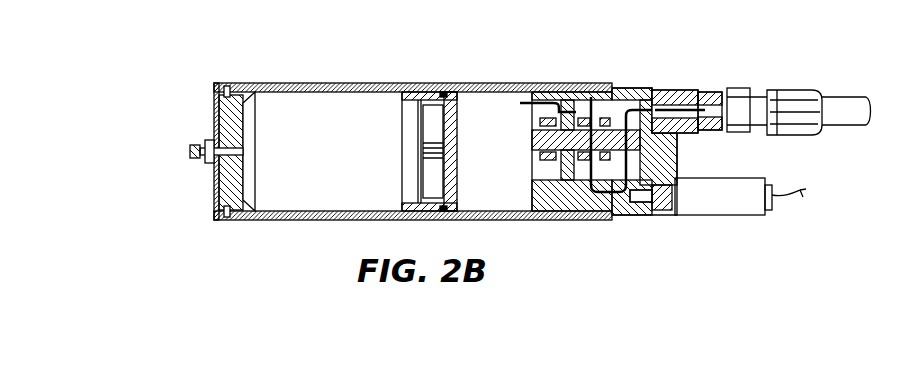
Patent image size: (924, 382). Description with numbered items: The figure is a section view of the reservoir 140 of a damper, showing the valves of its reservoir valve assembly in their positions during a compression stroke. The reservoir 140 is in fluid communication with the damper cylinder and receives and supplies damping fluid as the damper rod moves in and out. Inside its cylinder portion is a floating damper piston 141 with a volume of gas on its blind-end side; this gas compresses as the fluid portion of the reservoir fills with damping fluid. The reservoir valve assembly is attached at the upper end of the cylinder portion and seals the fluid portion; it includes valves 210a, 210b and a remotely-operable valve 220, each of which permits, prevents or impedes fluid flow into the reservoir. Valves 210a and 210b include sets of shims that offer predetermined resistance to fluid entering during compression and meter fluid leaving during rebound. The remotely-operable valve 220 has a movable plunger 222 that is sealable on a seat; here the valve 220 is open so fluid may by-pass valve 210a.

The reservoir 140 is at (219, 242).
The floating damper piston 141 is at (418, 92).
The valve 210a is at (612, 88).
The valve 210b is at (568, 92).
The remotely-operable valve 220 is at (740, 208).
The movable plunger 222 is at (640, 204).